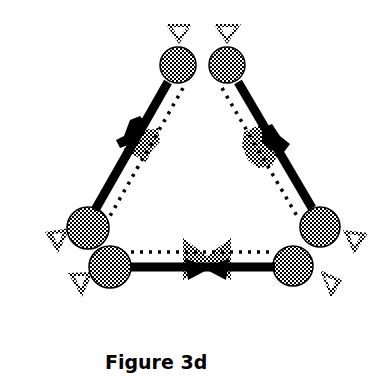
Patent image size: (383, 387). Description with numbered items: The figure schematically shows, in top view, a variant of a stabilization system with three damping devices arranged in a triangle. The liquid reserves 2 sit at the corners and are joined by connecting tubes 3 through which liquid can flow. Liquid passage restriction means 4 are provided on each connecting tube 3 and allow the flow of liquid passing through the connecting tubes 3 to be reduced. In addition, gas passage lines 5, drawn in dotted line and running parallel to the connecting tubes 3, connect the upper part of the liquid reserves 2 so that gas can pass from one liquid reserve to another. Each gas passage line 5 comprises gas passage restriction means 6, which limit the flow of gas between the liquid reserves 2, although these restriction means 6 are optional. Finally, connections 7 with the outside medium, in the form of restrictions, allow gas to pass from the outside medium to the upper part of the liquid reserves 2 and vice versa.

The liquid reserve 2 is at (86, 255).
The connecting tube 3 is at (305, 179).
The liquid passage restriction means 4 is at (126, 135).
The gas passage line 5 is at (149, 245).
The gas passage restriction means 6 is at (246, 153).
The connection with the outside medium 7 is at (157, 33).